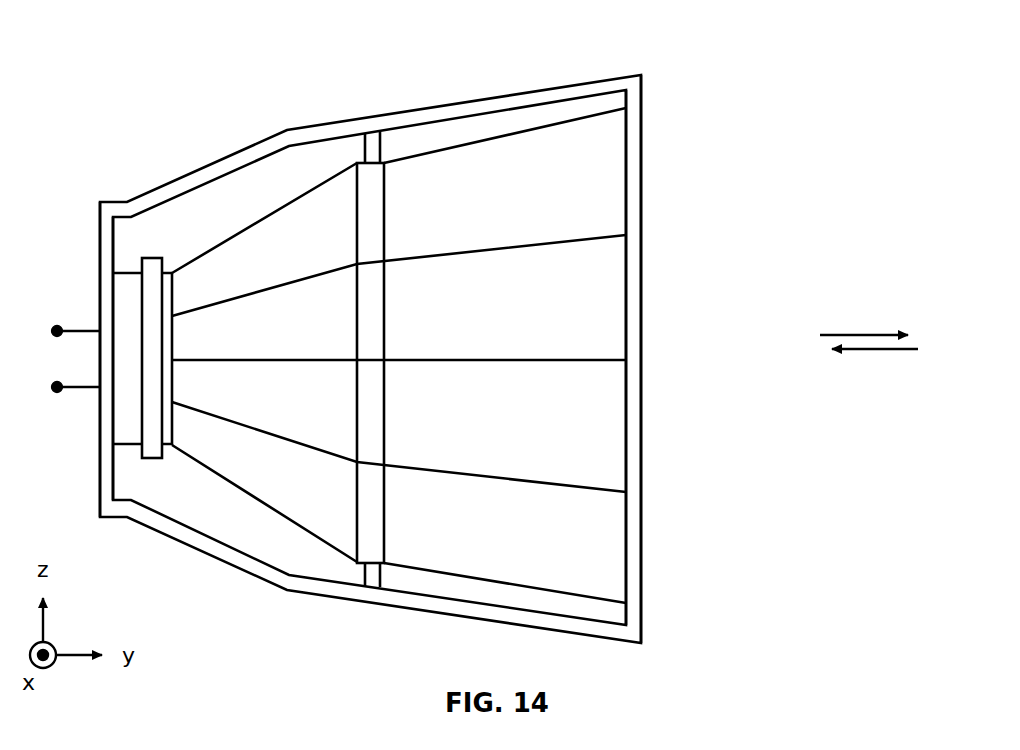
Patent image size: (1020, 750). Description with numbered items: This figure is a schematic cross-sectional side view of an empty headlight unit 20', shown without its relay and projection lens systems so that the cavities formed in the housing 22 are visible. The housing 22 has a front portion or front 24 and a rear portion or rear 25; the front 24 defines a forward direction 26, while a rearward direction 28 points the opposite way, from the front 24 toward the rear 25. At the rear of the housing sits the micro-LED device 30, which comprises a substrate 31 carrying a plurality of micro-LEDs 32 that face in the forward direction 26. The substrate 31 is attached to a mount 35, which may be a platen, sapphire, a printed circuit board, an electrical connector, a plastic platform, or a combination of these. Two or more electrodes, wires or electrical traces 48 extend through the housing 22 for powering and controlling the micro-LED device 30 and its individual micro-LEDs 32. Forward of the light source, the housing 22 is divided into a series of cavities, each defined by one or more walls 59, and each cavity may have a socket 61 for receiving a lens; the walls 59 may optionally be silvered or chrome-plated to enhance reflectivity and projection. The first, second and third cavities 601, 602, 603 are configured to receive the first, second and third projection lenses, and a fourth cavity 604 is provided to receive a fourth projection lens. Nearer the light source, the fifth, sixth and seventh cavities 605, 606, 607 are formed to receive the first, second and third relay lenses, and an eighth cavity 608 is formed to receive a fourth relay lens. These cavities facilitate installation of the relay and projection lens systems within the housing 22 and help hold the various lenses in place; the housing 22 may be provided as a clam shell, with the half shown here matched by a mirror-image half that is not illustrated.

The empty headlight unit 20' is at (448, 331).
The housing 22 is at (332, 125).
The front portion 24 is at (622, 75).
The rear portion 25 is at (113, 202).
The forward direction 26 is at (887, 333).
The rearward direction 28 is at (862, 351).
The micro-LED device 30 is at (190, 230).
The substrate 31 is at (152, 458).
The micro-LEDs 32 is at (172, 418).
The mount 35 is at (125, 302).
The electrodes, wires or electrical traces 48 is at (57, 424).
The walls 59 is at (258, 430).
The socket 61 is at (373, 298).
The first cavity 601 is at (527, 543).
The second cavity 602 is at (527, 425).
The third cavity 603 is at (527, 314).
The fourth cavity 604 is at (527, 200).
The fifth cavity 605 is at (315, 486).
The sixth cavity 606 is at (315, 411).
The seventh cavity 607 is at (315, 333).
The eighth cavity 608 is at (313, 258).